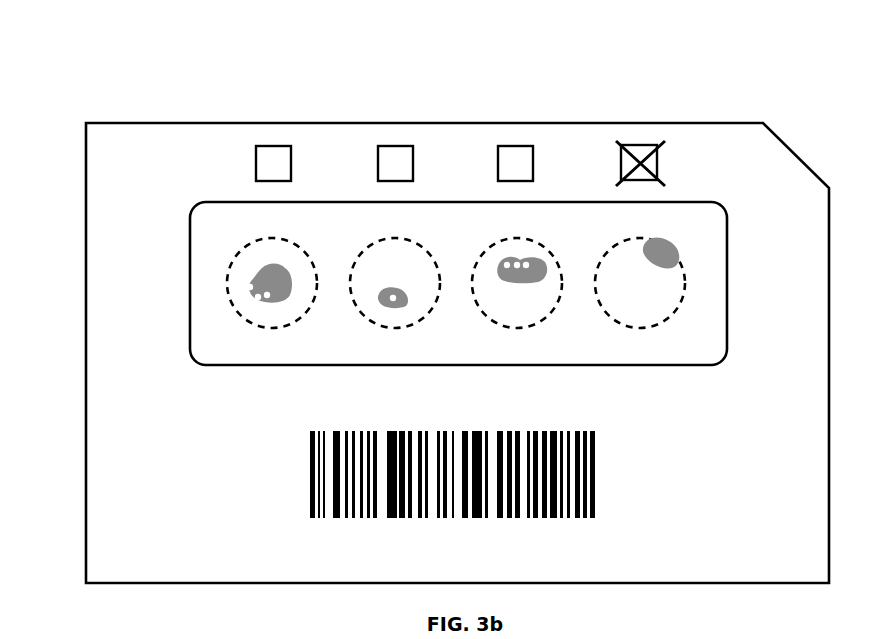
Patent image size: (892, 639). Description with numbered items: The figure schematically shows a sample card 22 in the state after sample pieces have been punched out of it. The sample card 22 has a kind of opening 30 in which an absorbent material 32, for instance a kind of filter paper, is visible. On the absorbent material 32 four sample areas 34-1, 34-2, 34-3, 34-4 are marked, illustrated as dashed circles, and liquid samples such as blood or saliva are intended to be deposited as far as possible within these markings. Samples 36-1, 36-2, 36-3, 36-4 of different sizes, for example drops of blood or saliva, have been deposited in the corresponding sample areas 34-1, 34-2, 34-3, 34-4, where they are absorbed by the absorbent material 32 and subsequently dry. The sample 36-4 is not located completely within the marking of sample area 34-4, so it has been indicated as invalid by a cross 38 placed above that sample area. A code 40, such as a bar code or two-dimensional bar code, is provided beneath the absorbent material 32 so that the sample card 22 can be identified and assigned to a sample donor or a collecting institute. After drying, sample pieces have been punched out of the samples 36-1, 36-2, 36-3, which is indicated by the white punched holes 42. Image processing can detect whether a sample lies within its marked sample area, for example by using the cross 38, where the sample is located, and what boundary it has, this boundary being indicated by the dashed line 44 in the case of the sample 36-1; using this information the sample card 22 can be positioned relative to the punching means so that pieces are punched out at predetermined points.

The sample card 22 is at (121, 188).
The opening 30 is at (189, 272).
The absorbent material 32 is at (325, 258).
The sample area 34-1 is at (245, 319).
The sample area 34-2 is at (364, 314).
The sample area 34-3 is at (486, 316).
The sample area 34-4 is at (608, 316).
The sample 36-1 is at (278, 277).
The sample 36-2 is at (390, 290).
The sample 36-3 is at (541, 273).
The sample 36-4 is at (662, 255).
The cross 38 is at (645, 152).
The code 40 is at (310, 482).
The punched holes 42 is at (517, 268).
The dashed line 44 is at (255, 284).